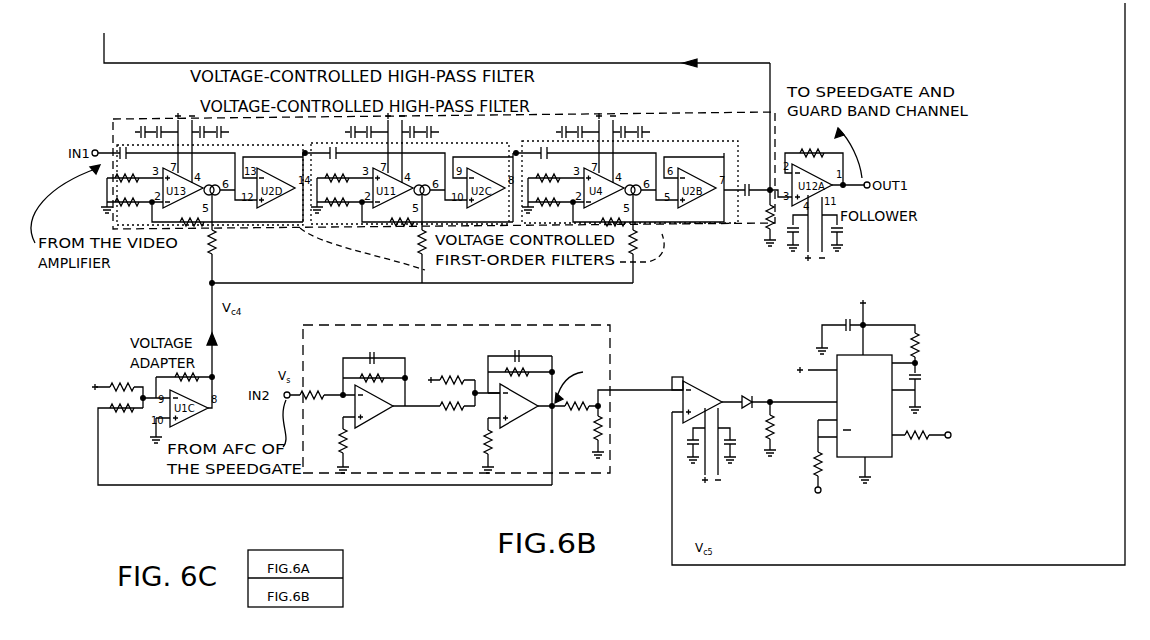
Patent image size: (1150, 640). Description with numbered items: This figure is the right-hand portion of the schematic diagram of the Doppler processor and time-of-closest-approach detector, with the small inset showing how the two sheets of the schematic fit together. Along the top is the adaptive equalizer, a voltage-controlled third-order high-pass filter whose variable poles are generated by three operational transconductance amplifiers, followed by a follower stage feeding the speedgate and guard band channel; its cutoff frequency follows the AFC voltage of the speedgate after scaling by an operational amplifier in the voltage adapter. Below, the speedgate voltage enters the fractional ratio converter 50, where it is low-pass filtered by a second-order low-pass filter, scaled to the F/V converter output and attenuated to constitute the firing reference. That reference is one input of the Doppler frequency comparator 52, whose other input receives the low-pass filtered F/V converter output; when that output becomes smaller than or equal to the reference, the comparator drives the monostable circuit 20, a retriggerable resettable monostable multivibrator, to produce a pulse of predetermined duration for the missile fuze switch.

The fractional ratio converter 50 is at (318, 327).
The Doppler frequency comparator 52 is at (706, 385).
The monostable circuit 20 is at (893, 407).